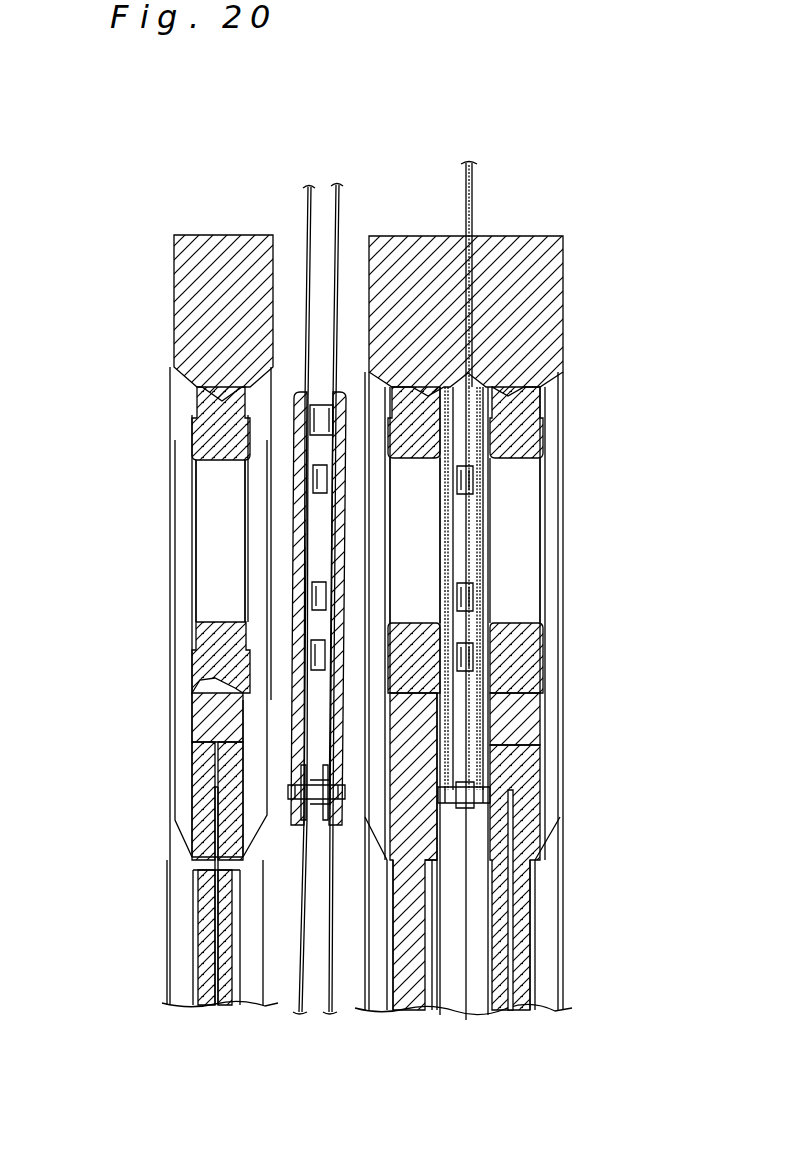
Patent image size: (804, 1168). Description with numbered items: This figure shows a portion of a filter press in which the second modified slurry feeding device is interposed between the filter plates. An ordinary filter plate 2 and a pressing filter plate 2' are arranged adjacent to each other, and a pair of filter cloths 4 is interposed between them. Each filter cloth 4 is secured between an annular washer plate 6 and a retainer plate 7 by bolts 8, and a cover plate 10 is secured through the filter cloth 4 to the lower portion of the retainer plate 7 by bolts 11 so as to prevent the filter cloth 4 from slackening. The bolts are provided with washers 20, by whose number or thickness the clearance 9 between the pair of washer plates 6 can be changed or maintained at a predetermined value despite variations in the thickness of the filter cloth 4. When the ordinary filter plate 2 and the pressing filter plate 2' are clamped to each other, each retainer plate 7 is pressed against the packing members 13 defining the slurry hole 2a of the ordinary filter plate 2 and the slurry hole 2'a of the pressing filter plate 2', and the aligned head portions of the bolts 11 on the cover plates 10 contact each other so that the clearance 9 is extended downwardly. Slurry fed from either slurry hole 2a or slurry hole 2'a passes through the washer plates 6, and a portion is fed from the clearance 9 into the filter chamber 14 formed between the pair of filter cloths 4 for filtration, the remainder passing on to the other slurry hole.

The pressing filter plate 2' is at (376, 578).
The ordinary filter plate 2 is at (463, 583).
The filter cloth 4 is at (302, 212).
The packing member 13 is at (205, 400).
The slurry hole 2'a is at (360, 540).
The slurry hole 2a is at (418, 512).
The clearance 9 is at (470, 562).
The washer 20 is at (490, 476).
The bolt 8 is at (323, 496).
The annular washer plate 6 is at (325, 679).
The retainer plate 7 is at (289, 826).
The cover plate 10 is at (313, 816).
The bolt 11 is at (470, 808).
The filter chamber 14 is at (465, 897).